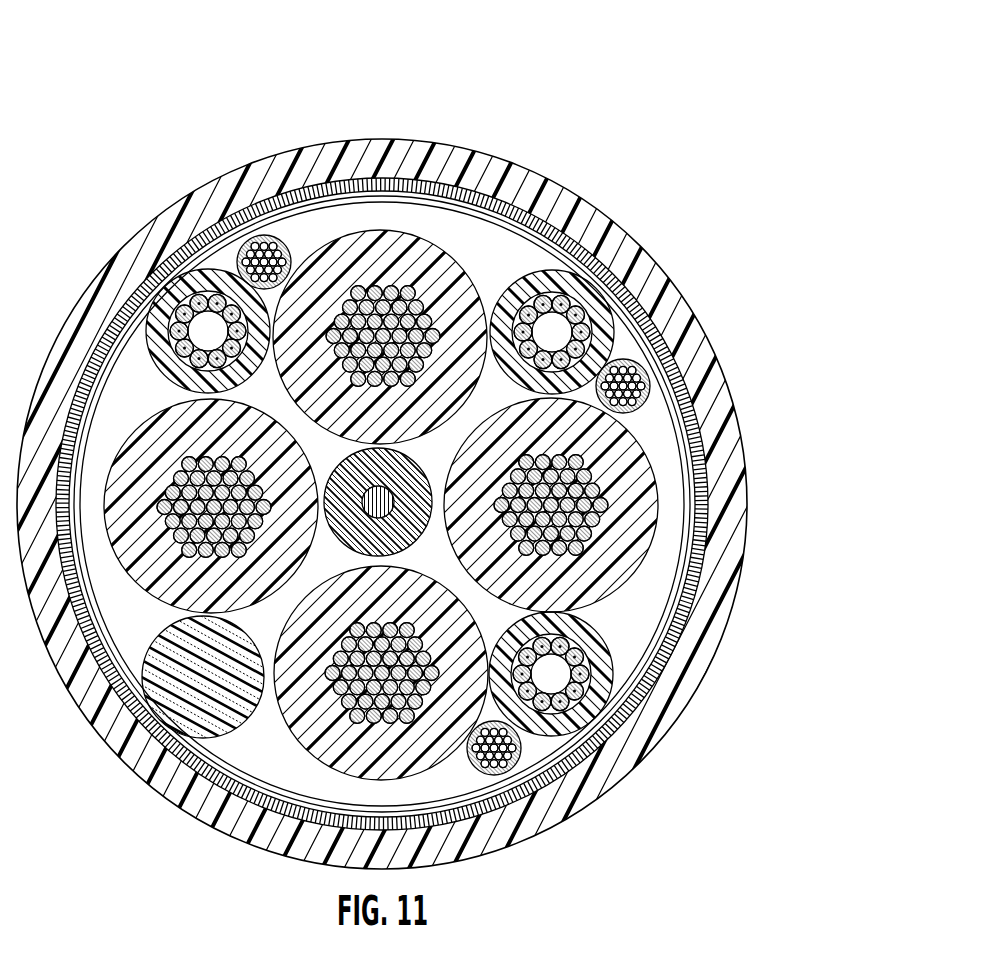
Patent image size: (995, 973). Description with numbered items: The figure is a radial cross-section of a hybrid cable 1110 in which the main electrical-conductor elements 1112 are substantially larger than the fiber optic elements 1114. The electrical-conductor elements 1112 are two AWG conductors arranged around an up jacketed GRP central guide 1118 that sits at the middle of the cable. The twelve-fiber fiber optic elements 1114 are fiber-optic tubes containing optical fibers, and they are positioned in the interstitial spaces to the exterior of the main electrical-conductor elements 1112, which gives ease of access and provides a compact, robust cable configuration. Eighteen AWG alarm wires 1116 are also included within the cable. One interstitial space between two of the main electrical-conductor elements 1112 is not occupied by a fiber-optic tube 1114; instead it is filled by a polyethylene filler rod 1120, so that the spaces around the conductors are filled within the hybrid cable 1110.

The hybrid cable 1110 is at (622, 117).
The main electrical-conductor element 1112 is at (427, 285).
The fiber optic element 1114 is at (197, 333).
The alarm wire 1116 is at (283, 243).
The up jacketed GRP central guide 1118 is at (378, 518).
The polyethylene filler rod 1120 is at (195, 680).